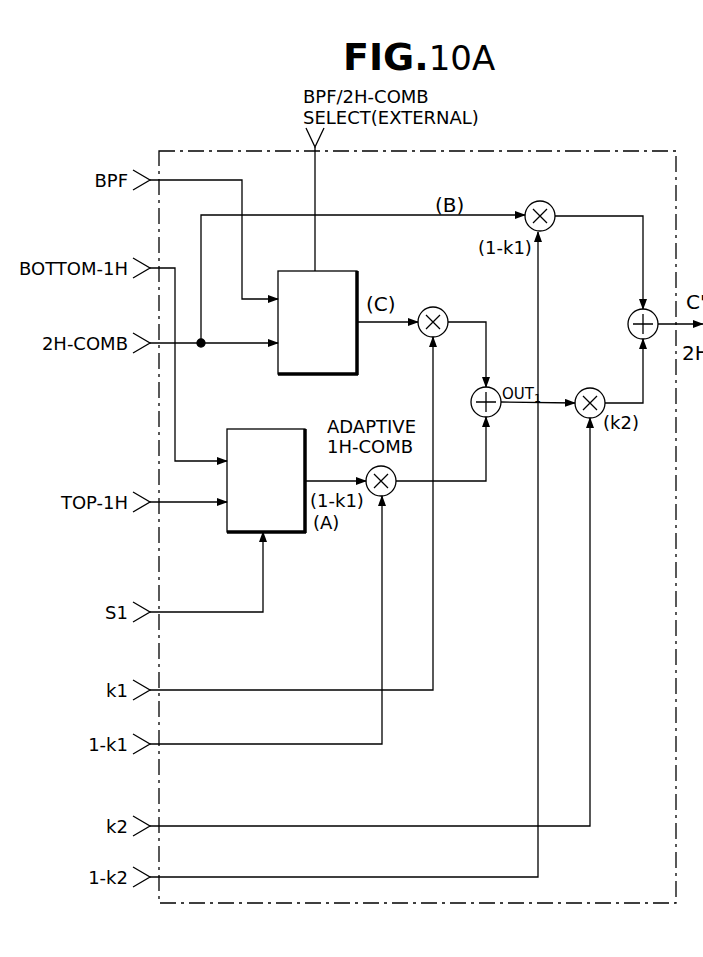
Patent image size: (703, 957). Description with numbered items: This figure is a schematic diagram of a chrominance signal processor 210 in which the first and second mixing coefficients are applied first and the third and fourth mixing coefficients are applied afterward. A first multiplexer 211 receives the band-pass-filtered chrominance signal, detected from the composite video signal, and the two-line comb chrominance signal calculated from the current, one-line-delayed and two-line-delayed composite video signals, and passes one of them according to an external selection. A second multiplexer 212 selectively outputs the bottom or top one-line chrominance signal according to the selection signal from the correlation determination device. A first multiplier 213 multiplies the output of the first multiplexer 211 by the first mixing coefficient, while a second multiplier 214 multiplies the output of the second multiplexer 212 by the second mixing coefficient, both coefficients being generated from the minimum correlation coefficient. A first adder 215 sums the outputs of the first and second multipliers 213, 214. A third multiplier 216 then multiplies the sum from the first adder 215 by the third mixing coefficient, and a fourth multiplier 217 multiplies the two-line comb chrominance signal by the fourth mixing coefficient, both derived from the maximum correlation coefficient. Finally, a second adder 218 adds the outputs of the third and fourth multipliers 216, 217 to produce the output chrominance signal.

The chrominance signal processor 210 is at (608, 903).
The first multiplexer 211 is at (357, 271).
The second multiplexer 212 is at (305, 429).
The first multiplier 213 is at (443, 311).
The second multiplier 214 is at (393, 492).
The first adder 215 is at (496, 390).
The third multiplier 216 is at (590, 388).
The fourth multiplier 217 is at (551, 206).
The second adder 218 is at (632, 313).